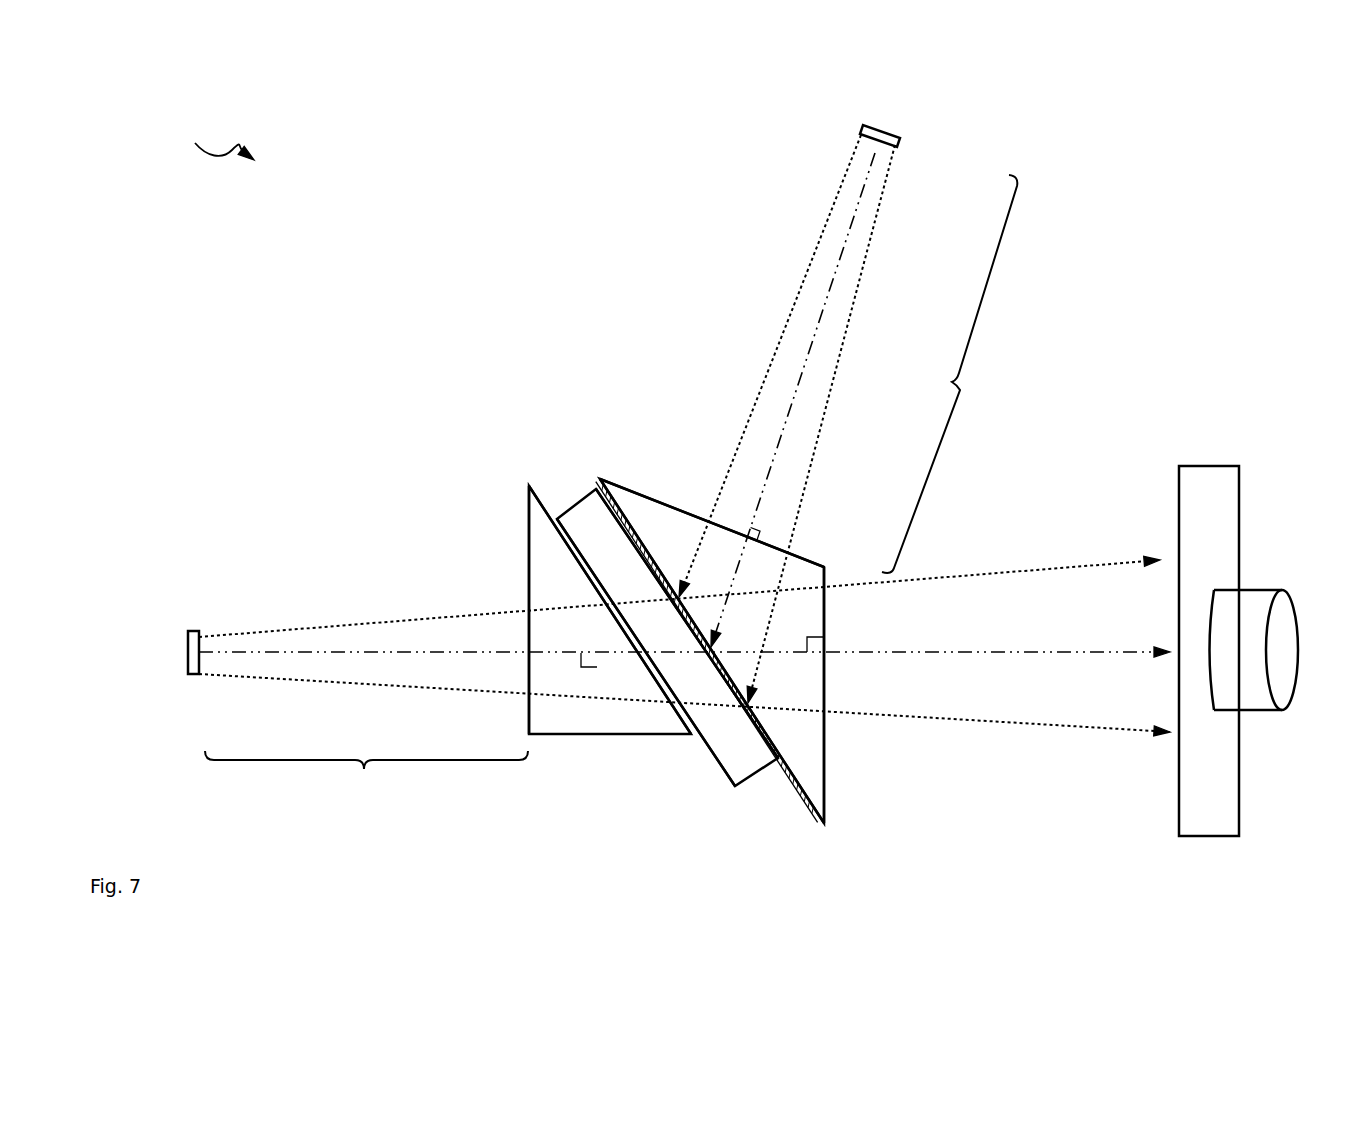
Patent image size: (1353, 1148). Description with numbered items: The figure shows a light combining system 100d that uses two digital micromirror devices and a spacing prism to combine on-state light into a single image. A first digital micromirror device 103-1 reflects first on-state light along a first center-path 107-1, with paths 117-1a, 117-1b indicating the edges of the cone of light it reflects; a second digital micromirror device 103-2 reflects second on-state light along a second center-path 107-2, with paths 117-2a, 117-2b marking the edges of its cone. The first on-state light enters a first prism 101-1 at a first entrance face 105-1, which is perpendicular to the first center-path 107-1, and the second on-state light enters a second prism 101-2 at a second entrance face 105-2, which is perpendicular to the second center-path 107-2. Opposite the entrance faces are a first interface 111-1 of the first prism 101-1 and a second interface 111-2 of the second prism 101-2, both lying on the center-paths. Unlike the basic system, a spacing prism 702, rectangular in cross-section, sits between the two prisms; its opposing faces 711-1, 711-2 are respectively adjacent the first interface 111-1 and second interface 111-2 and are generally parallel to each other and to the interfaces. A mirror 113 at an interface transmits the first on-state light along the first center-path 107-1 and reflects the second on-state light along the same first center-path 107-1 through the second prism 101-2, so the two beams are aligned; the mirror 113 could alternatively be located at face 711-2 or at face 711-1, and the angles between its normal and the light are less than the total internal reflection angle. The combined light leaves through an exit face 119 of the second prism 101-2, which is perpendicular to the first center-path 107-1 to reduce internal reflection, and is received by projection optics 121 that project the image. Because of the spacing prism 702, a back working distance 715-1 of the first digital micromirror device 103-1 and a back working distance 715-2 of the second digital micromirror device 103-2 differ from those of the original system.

The light combining system 100d is at (208, 138).
The first digital micromirror device 103-1 is at (186, 640).
The second digital micromirror device 103-2 is at (893, 140).
The path 117-1a is at (222, 675).
The path 117-1b is at (347, 623).
The first center-path 107-1 is at (332, 654).
The path 117-2a is at (823, 418).
The path 117-2b is at (780, 328).
The second center-path 107-2 is at (785, 422).
The first prism 101-1 is at (540, 549).
The first interface 111-1 is at (542, 507).
The first entrance face 105-1 is at (511, 574).
The second prism 101-2 is at (815, 773).
The second interface 111-2 is at (597, 482).
The second entrance face 105-2 is at (816, 548).
The exit face 119 is at (846, 739).
The mirror 113 is at (810, 803).
The spacing prism 702 is at (667, 659).
The face 711-1 is at (712, 757).
The face 711-2 is at (767, 748).
The projection optics 121 is at (1238, 651).
The back working distance 715-1 is at (366, 774).
The back working distance 715-2 is at (952, 374).